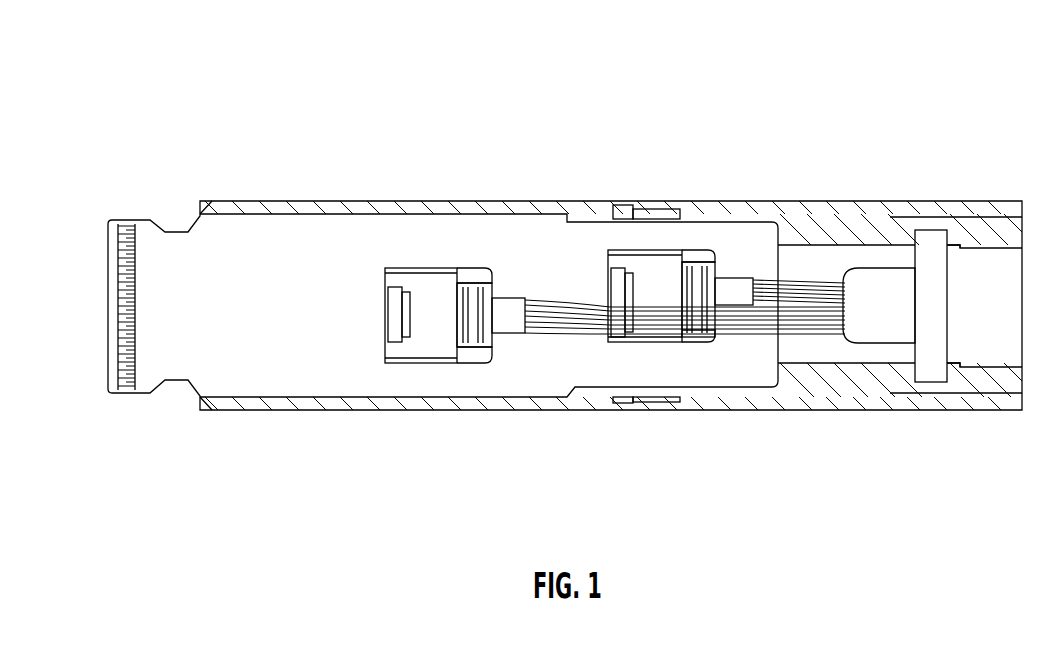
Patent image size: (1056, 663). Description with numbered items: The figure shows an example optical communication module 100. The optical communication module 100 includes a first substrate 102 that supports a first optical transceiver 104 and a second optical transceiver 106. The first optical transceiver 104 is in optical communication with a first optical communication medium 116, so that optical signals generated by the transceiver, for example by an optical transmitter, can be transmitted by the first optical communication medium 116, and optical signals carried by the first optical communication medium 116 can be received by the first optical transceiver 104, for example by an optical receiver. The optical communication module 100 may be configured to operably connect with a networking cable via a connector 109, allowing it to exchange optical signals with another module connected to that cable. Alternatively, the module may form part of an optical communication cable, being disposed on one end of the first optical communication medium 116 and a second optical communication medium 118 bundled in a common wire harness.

The optical communication module 100 is at (95, 137).
The first substrate 102 is at (192, 233).
The first optical transceiver 104 is at (648, 260).
The second optical transceiver 106 is at (423, 290).
The connector 109 is at (962, 248).
The first optical communication medium 116 is at (787, 277).
The second optical communication medium 118 is at (560, 333).